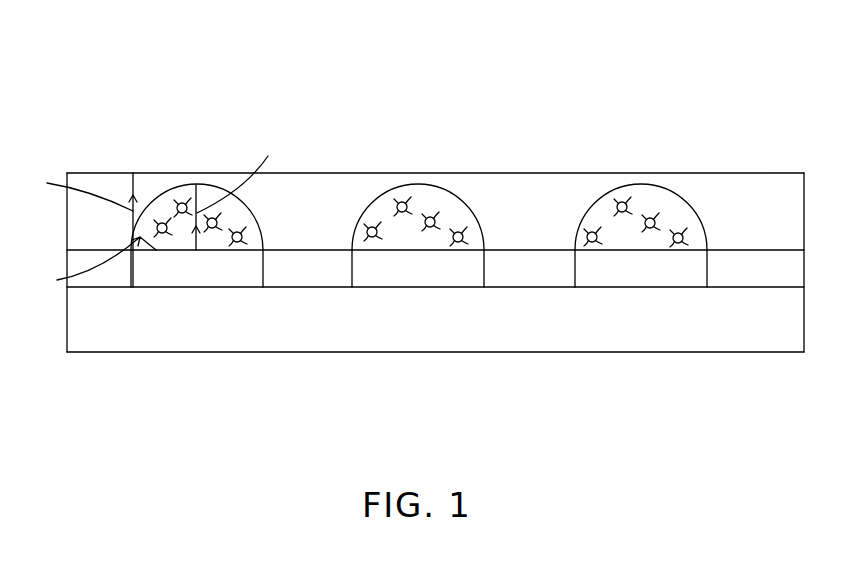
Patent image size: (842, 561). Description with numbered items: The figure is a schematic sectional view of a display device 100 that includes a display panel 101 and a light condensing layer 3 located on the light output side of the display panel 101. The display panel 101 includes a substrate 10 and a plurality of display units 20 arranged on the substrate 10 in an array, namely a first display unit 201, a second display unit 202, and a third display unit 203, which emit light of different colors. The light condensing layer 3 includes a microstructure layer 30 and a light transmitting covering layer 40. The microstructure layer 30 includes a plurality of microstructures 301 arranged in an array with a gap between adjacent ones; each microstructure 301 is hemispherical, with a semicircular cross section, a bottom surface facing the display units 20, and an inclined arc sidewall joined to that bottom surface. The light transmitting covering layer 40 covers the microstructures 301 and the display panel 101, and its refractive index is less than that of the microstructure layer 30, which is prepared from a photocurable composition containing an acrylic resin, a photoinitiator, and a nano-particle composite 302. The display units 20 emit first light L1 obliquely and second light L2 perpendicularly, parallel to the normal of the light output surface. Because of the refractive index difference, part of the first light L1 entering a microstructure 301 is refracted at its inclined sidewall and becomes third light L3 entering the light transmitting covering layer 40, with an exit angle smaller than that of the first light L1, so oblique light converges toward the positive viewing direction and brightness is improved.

The display device 100 is at (449, 70).
The substrate 10 is at (88, 325).
The display panel 101 is at (53, 245).
The display units 20 is at (640, 402).
The first display unit 201 is at (190, 277).
The second display unit 202 is at (407, 275).
The third display unit 203 is at (646, 273).
The light condensing layer 3 is at (397, 128).
The microstructure layer 30 is at (390, 193).
The microstructure 301 is at (215, 200).
The nano-particle composite 302 is at (173, 206).
The light transmitting covering layer 40 is at (335, 190).
The first light L1 is at (89, 262).
The second light L2 is at (236, 183).
The third light L3 is at (77, 190).